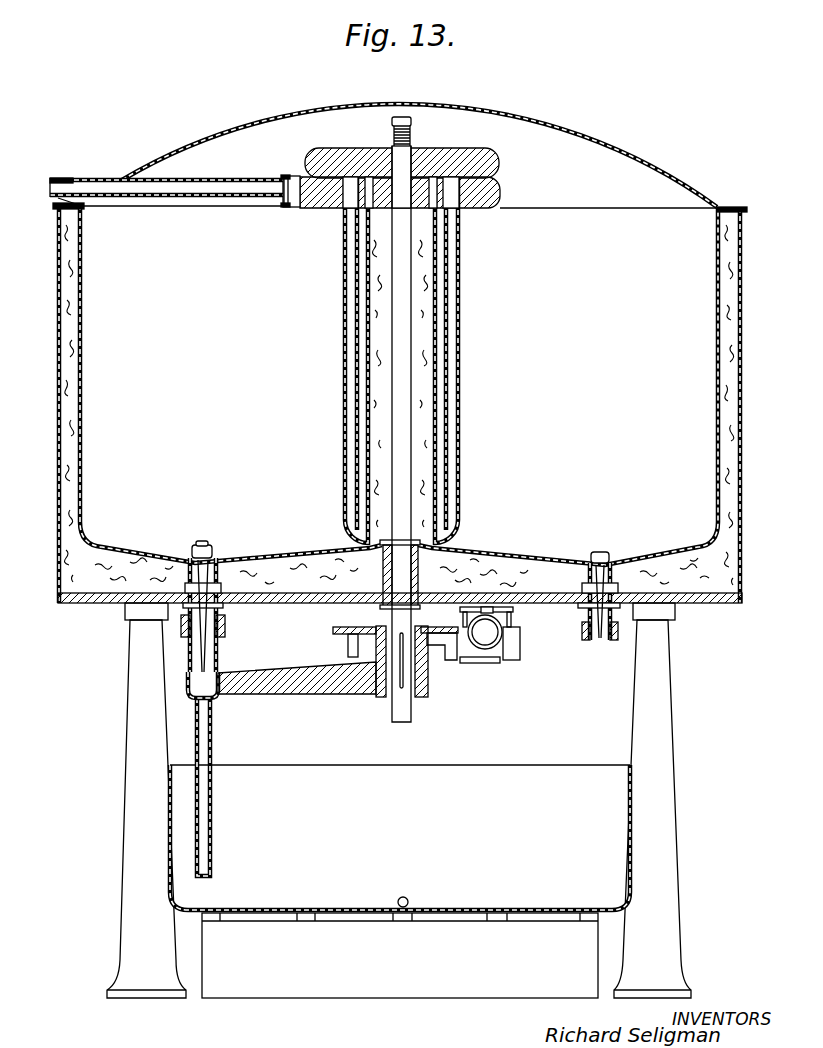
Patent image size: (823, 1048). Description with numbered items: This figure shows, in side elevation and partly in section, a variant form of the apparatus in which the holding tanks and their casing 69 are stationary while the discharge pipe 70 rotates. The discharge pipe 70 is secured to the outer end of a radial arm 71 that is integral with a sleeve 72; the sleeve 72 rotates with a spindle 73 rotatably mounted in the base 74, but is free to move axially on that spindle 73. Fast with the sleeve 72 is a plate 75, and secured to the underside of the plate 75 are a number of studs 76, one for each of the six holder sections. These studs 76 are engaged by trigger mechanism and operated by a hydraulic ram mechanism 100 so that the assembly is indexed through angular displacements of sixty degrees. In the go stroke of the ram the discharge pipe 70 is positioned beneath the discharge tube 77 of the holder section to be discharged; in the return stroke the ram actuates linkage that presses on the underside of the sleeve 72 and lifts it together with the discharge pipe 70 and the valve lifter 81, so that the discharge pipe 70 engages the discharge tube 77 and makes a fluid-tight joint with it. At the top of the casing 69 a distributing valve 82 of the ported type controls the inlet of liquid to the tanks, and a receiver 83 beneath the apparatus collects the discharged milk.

The casing 69 is at (78, 385).
The discharge pipe 70 is at (213, 748).
The radial arm 71 is at (304, 695).
The sleeve 72 is at (418, 697).
The spindle 73 is at (396, 705).
The base 74 is at (485, 597).
The plate 75 is at (338, 628).
The studs 76 is at (348, 645).
The discharge tube 77 is at (190, 615).
The valve lifter 81 is at (217, 676).
The distributing valve 82 is at (498, 160).
The receiver 83 is at (400, 881).
The hydraulic ram mechanism 100 is at (487, 634).